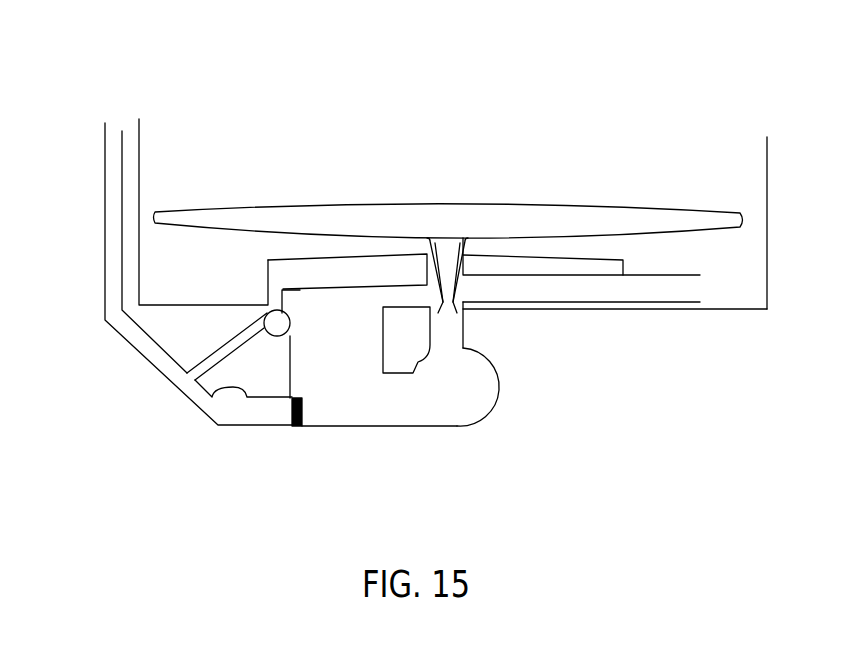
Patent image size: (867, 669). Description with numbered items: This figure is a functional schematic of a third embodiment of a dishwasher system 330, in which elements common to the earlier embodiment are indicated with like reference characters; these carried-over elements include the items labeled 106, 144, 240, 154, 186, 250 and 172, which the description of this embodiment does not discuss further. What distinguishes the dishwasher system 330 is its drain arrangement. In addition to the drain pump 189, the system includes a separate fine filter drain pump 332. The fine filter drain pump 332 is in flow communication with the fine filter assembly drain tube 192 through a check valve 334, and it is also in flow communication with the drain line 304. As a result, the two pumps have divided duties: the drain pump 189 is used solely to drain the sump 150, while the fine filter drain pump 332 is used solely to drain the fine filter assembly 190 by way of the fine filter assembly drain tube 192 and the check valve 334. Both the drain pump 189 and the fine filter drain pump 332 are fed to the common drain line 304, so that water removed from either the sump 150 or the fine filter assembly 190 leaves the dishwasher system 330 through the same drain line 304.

The dishwasher system 330 is at (594, 66).
The housing wall 106 is at (690, 172).
The drain line 304 is at (112, 198).
The fine filter assembly 190 is at (310, 270).
The fine filter assembly drain tube 192 is at (277, 295).
The nozzle 144 is at (469, 192).
The platen block 240 is at (515, 273).
The base plate 154 is at (589, 296).
The check valve 334 is at (291, 313).
The fine filter drain pump 332 is at (270, 331).
The drain pump 189 is at (232, 398).
The seal 186 is at (297, 427).
The sump 150 is at (368, 408).
The wall portion 250 is at (466, 320).
The rounded end 172 is at (463, 415).